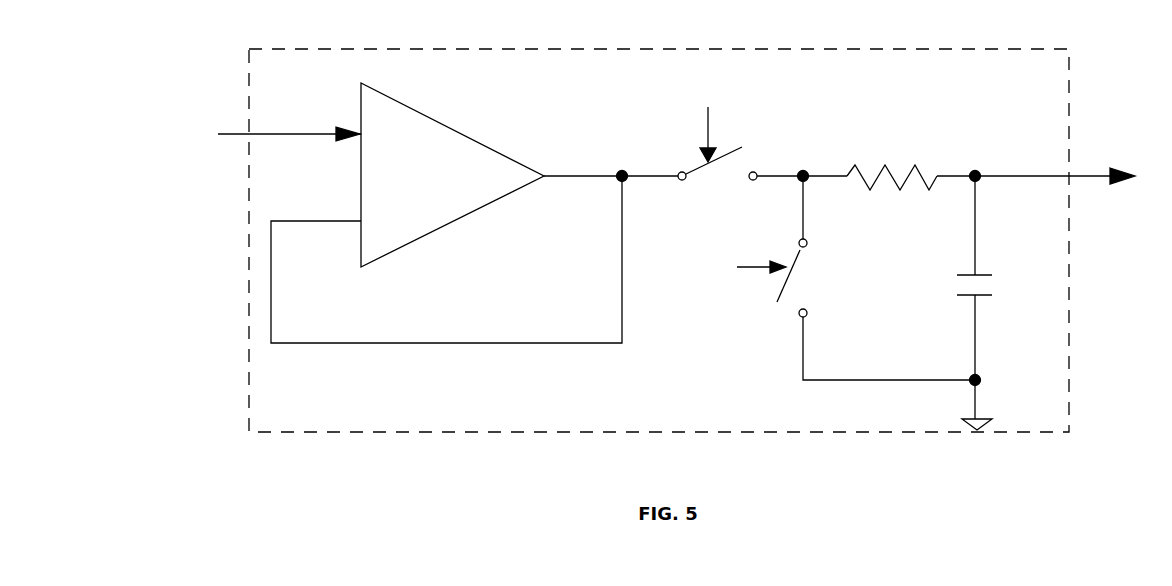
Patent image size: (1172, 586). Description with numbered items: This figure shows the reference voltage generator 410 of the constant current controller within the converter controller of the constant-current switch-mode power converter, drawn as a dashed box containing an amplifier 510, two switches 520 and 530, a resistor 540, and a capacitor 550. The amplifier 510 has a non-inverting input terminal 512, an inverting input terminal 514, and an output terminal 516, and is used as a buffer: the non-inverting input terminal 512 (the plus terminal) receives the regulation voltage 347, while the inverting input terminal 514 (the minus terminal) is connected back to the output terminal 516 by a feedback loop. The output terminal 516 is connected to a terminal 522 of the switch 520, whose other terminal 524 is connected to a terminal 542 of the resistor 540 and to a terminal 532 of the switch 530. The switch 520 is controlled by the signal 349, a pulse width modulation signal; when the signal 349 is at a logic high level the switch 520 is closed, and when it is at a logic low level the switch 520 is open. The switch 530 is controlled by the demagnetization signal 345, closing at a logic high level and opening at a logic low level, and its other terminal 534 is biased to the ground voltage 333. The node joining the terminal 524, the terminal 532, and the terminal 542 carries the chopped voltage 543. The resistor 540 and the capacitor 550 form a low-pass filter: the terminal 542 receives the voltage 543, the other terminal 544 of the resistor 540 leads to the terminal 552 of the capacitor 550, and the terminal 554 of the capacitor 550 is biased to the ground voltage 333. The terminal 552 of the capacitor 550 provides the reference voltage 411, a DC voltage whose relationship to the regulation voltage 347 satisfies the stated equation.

The regulation voltage 347 is at (238, 134).
The non-inverting input terminal 512 is at (360, 132).
The inverting input terminal 514 is at (360, 222).
The amplifier 510 is at (492, 208).
The output terminal 516 is at (546, 176).
The terminal 522 is at (680, 172).
The switch 520 is at (712, 160).
The signal 349 is at (708, 127).
The terminal 524 is at (754, 170).
The voltage 543 is at (808, 178).
The terminal 542 is at (848, 172).
The resistor 540 is at (917, 170).
The terminal 544 is at (935, 180).
The reference voltage 411 is at (1098, 178).
The terminal 532 is at (808, 245).
The switch 530 is at (790, 283).
The demagnetization signal 345 is at (757, 269).
The terminal 534 is at (808, 315).
The terminal 552 is at (985, 275).
The capacitor 550 is at (960, 297).
The terminal 554 is at (990, 297).
The ground voltage 333 is at (980, 391).
The reference voltage generator 410 is at (1027, 433).